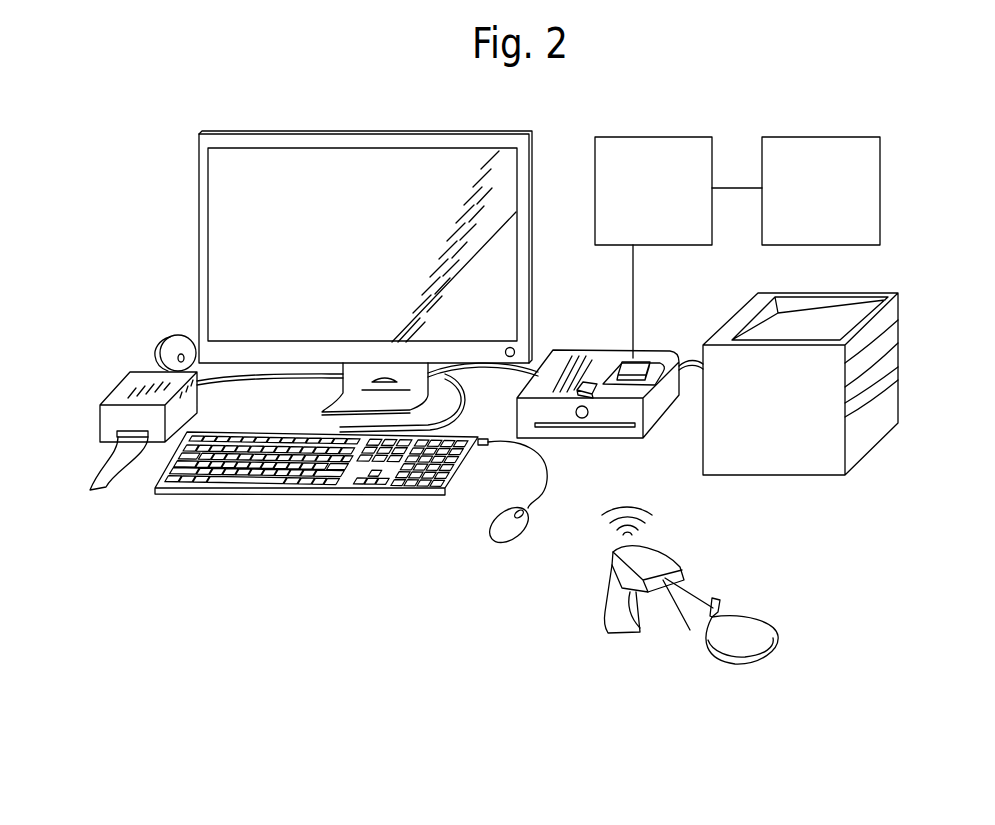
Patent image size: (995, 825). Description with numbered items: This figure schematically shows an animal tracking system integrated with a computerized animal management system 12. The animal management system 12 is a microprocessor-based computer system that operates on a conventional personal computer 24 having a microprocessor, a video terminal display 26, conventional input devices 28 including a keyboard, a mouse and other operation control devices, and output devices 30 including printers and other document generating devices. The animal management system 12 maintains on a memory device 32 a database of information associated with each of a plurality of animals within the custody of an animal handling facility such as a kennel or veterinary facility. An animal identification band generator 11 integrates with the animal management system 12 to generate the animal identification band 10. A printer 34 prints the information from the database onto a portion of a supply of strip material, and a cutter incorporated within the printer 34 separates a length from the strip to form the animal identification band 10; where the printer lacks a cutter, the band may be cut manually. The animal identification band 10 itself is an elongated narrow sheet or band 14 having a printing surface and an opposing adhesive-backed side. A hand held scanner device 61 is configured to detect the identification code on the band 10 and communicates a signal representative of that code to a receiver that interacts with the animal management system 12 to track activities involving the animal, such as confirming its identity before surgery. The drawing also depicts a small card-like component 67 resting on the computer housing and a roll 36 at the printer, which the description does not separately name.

The video terminal display 26 is at (348, 162).
The input devices 28 is at (503, 522).
The printer 34 is at (135, 385).
The label roll 36 is at (167, 338).
The band 14 is at (110, 466).
The animal management system 12 is at (665, 143).
The animal identification band generator 11 is at (825, 150).
The personal computer 24 is at (658, 400).
The memory device 32 is at (641, 352).
The access card 67 is at (580, 348).
The output devices 30 is at (800, 384).
The hand held scanner device 61 is at (617, 580).
The animal identification band 10 is at (745, 618).